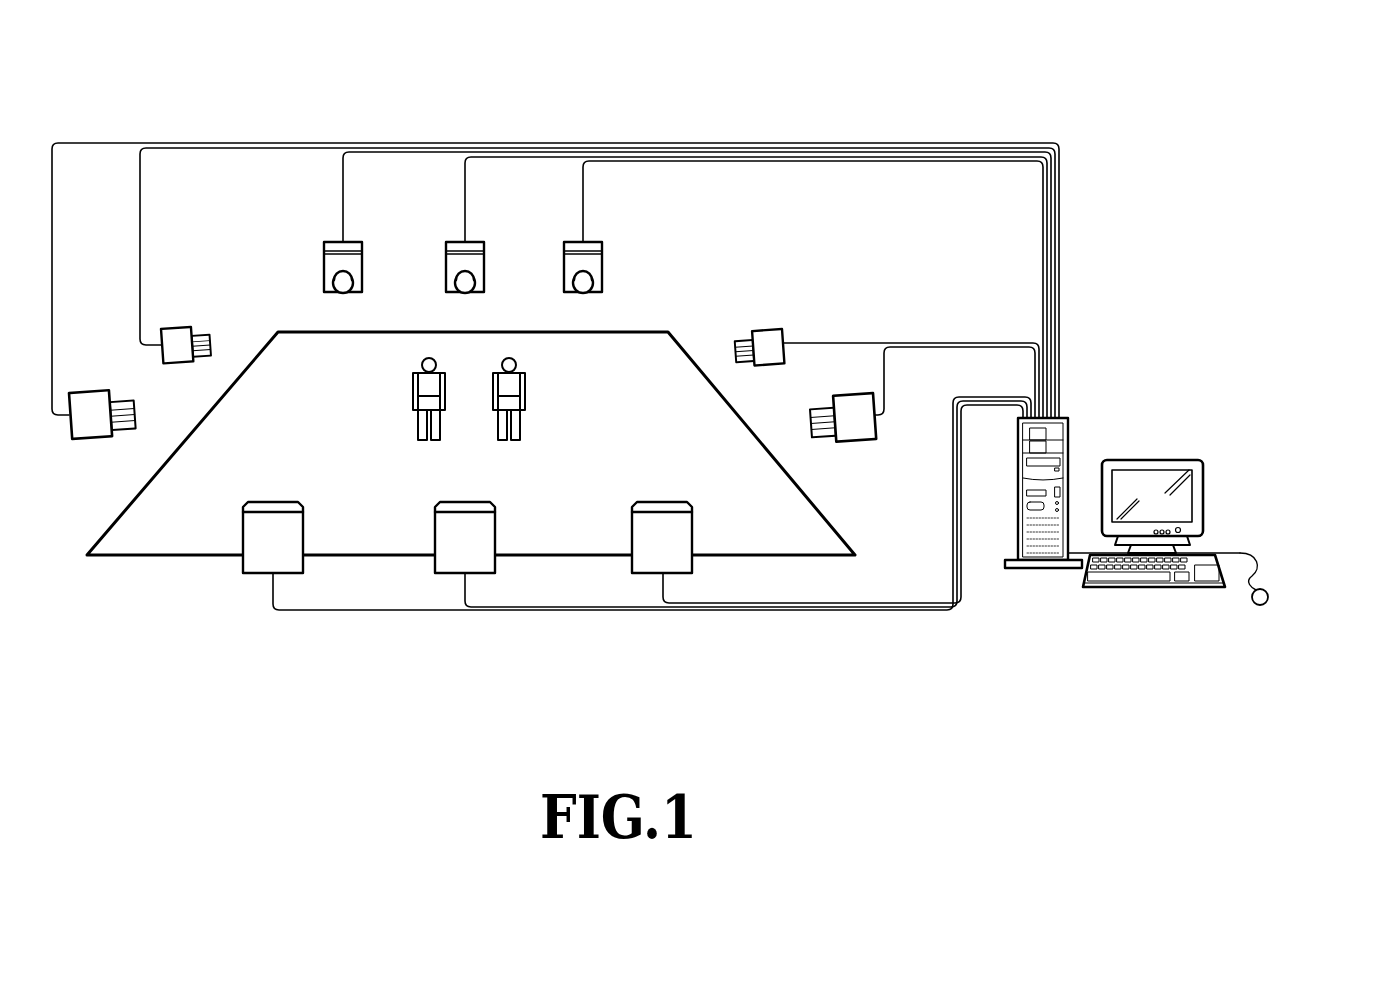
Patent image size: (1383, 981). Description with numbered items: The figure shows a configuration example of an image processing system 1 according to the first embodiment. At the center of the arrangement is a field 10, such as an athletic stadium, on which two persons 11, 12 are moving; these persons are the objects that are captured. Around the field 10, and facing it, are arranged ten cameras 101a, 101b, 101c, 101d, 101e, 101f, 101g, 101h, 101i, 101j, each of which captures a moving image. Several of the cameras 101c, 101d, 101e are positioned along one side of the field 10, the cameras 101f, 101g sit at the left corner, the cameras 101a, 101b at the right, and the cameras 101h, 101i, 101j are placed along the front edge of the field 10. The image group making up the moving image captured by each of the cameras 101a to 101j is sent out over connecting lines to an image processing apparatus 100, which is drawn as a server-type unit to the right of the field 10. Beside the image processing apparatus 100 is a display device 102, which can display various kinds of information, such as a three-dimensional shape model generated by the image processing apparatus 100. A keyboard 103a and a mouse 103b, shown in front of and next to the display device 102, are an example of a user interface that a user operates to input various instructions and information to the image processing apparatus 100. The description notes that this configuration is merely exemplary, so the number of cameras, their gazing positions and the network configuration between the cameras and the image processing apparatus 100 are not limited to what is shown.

The image processing system 1 is at (1152, 78).
The field 10 is at (108, 532).
The person 11 is at (445, 390).
The person 12 is at (525, 390).
The image processing apparatus 100 is at (1068, 426).
The camera 101a is at (852, 440).
The camera 101b is at (762, 329).
The camera 101c is at (602, 246).
The camera 101d is at (484, 246).
The camera 101e is at (362, 246).
The camera 101f is at (177, 329).
The camera 101g is at (92, 392).
The camera 101h is at (288, 501).
The camera 101i is at (480, 501).
The camera 101j is at (676, 501).
The display device 102 is at (1172, 459).
The keyboard 103a is at (1142, 588).
The mouse 103b is at (1268, 597).